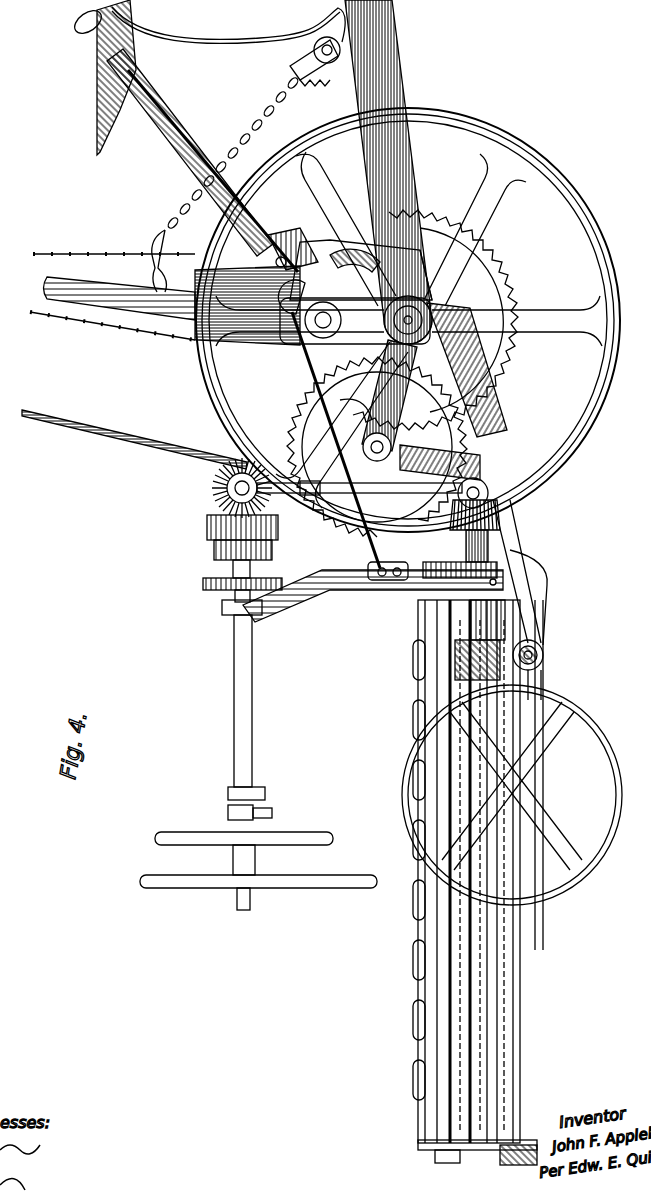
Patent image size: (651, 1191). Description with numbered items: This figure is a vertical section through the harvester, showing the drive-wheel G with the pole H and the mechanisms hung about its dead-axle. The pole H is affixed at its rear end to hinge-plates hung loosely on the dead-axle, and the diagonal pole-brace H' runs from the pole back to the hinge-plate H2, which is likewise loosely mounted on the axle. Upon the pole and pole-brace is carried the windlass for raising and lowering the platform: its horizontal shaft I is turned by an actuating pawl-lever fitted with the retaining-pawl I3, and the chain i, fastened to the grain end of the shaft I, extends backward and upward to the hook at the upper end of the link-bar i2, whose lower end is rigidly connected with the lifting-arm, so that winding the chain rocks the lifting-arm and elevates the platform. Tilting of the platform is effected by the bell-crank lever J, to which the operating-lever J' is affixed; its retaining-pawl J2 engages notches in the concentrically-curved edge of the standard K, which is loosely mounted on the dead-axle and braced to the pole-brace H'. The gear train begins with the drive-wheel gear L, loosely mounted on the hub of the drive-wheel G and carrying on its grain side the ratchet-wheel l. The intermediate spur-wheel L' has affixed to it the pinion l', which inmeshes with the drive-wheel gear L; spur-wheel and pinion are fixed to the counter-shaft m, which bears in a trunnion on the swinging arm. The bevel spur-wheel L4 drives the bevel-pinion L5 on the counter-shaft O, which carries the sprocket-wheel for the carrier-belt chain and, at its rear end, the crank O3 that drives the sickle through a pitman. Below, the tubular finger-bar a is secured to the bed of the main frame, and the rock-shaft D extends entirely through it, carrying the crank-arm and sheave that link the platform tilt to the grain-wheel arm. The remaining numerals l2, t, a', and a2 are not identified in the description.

The drive-wheel G is at (408, 320).
The pole H is at (388, 230).
The diagonal pole-brace H' is at (384, 262).
The hinge-plate H2 is at (435, 320).
The windlass-shaft I is at (398, 360).
The retaining-pawl I3 is at (290, 66).
The chain i is at (232, 153).
The link-bar i2 is at (147, 257).
The bell-crank lever J is at (352, 312).
The operating-lever J' is at (355, 265).
The retaining-pawl J2 is at (312, 232).
The standard K is at (377, 446).
The drive-wheel gear L is at (334, 440).
The intermediate spur-wheel L' is at (337, 462).
The bevel spur-wheel L4 is at (488, 480).
The bevel-pinion L5 is at (500, 525).
The ratchet-wheel l is at (373, 507).
The pinion l' is at (366, 571).
The clutch block l2 is at (275, 712).
The counter-shaft m is at (370, 425).
The counter-shaft O is at (460, 554).
The crank O3 is at (477, 660).
The bearing t is at (487, 620).
The finger-bar a is at (538, 649).
The crank plate a' is at (538, 597).
The connecting rod a2 is at (517, 571).
The rock-shaft D is at (543, 665).